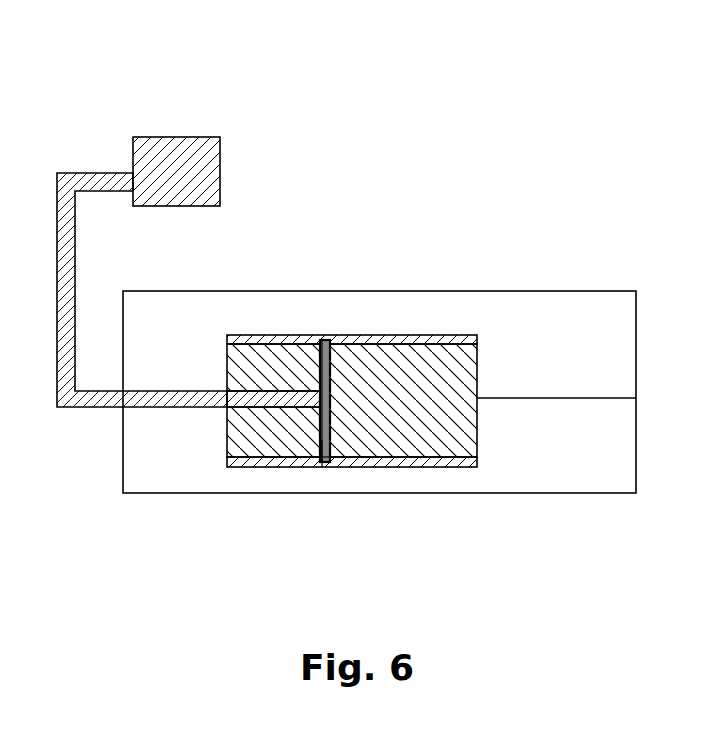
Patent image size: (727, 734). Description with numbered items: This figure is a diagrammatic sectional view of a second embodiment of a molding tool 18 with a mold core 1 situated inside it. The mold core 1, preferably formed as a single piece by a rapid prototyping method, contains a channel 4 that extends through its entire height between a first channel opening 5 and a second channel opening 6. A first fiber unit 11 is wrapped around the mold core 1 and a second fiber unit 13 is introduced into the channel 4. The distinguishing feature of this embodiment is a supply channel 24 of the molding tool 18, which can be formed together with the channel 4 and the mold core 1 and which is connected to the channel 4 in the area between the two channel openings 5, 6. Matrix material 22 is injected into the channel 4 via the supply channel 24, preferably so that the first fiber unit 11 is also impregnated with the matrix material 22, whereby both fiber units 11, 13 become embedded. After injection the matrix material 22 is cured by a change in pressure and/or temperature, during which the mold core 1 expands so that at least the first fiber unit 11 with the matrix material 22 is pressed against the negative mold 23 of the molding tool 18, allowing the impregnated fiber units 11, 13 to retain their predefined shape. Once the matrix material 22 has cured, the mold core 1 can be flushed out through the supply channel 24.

The mold core 1 is at (403, 480).
The channel 4 is at (255, 522).
The first channel opening 5 is at (334, 318).
The second channel opening 6 is at (329, 528).
The first fiber unit 11 is at (352, 529).
The second fiber unit 13 is at (373, 320).
The molding tool 18 is at (379, 302).
The matrix material 22 is at (187, 112).
The negative mold 23 is at (359, 248).
The supply channel 24 is at (188, 315).